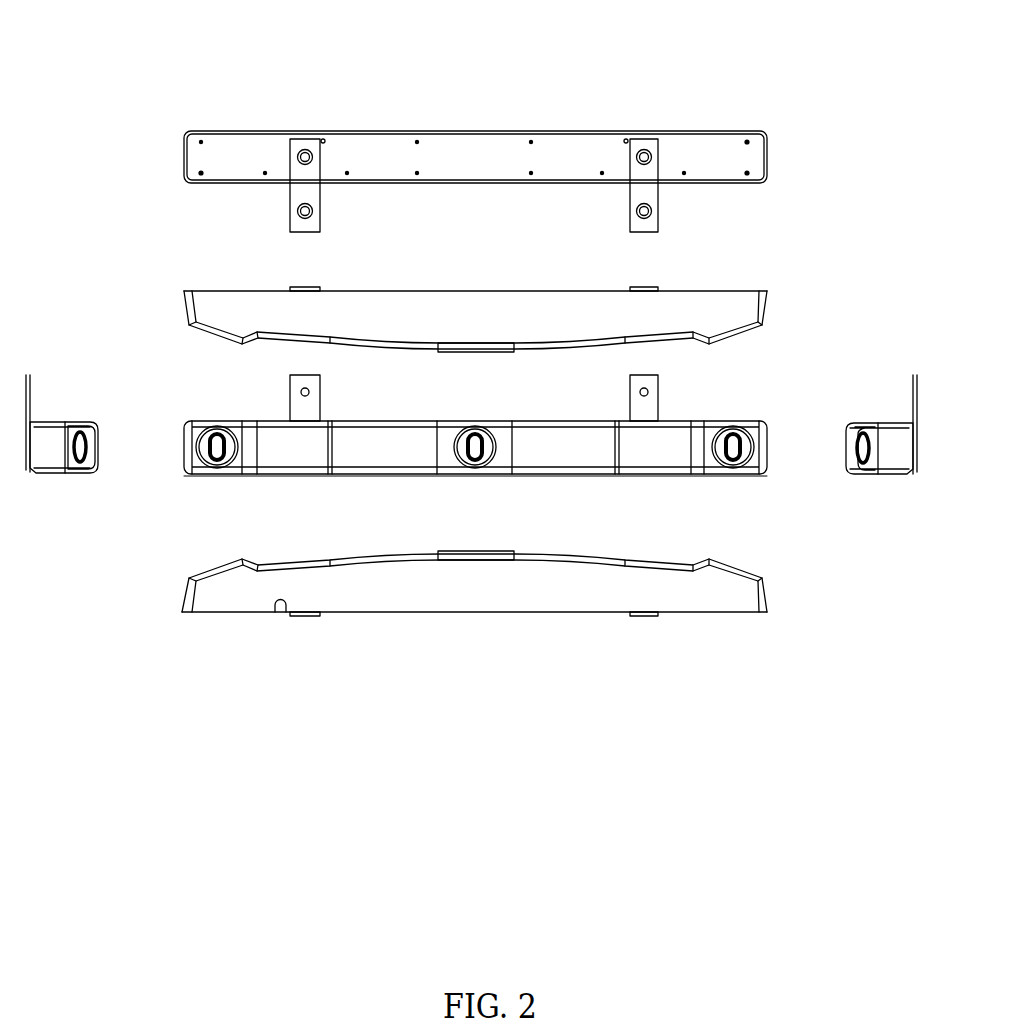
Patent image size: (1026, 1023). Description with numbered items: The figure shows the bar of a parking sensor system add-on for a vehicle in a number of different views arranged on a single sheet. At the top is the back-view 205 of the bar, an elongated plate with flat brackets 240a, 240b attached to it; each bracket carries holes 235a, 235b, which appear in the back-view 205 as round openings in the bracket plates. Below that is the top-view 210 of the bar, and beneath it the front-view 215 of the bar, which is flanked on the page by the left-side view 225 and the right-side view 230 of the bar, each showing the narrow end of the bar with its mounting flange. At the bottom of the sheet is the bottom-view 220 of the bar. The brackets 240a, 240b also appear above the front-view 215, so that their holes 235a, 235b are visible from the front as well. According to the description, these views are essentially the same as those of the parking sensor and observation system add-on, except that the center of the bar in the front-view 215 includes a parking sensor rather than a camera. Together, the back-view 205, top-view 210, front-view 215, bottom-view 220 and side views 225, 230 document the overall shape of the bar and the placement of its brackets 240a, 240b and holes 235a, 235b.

The back-view 205 is at (718, 150).
The top-view 210 is at (733, 302).
The front-view 215 is at (765, 428).
The bottom-view 220 is at (738, 592).
The left-side view 225 is at (57, 437).
The right-side view 230 is at (862, 426).
The hole 235a is at (297, 213).
The hole 235b is at (636, 213).
The flat bracket 240a is at (300, 190).
The flat bracket 240b is at (640, 190).